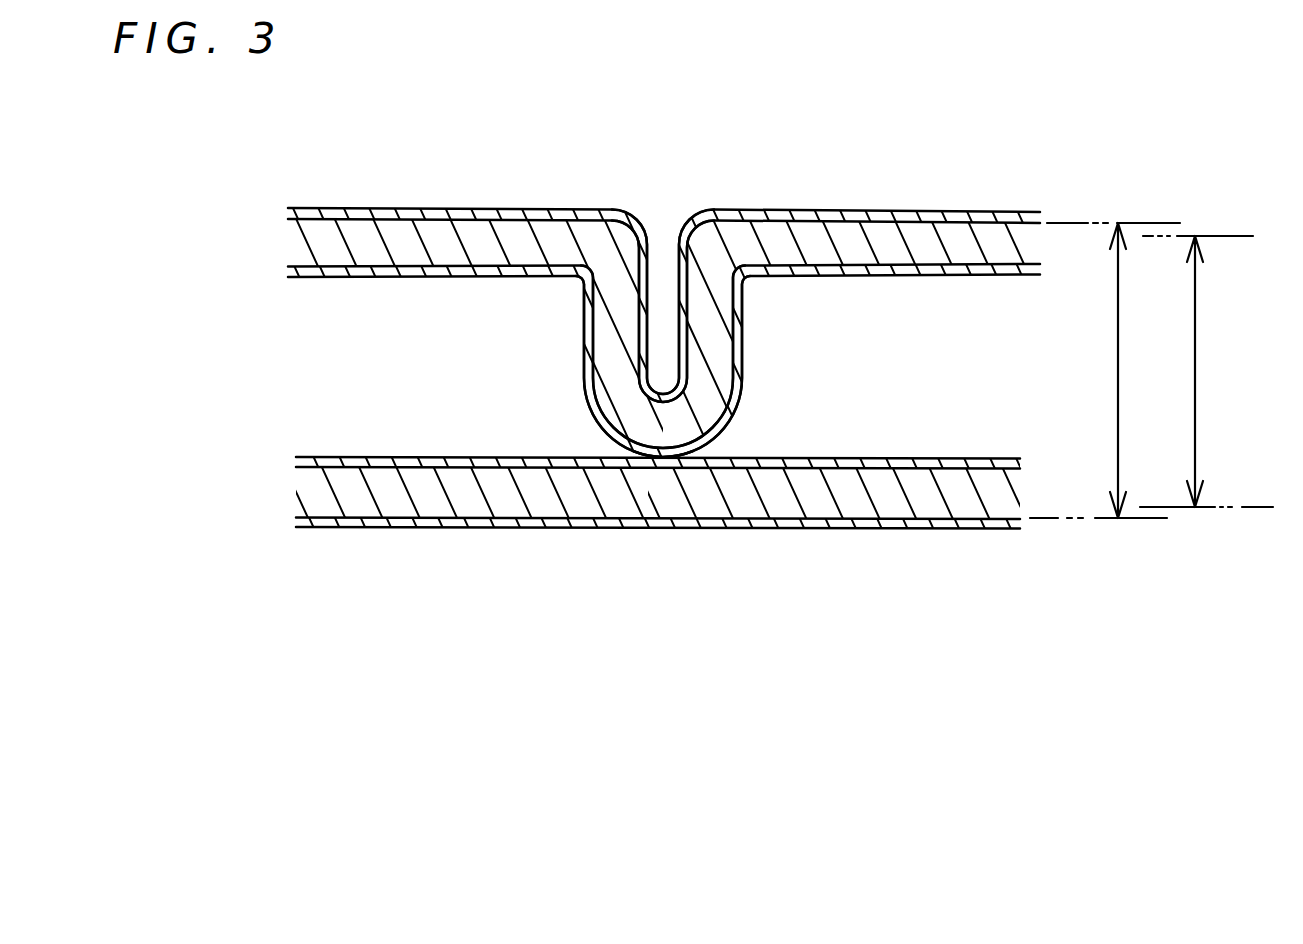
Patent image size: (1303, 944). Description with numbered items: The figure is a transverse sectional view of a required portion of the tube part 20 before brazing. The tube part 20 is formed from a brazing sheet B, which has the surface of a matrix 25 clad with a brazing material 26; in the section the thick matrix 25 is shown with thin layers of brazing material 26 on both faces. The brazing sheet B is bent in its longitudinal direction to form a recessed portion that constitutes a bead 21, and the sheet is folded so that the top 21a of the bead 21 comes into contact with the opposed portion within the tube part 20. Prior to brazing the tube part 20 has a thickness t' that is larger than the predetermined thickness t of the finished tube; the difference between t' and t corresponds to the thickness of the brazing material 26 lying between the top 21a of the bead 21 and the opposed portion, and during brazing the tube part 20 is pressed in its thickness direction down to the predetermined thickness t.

The tube part 20 is at (1003, 127).
The brazing sheet B is at (248, 205).
The matrix 25 is at (318, 240).
The brazing material 26 is at (398, 209).
The bead 21 is at (705, 371).
The top of the bead 21a is at (662, 458).
The predetermined thickness t is at (1216, 371).
The thickness prior to brazing t' is at (1102, 370).